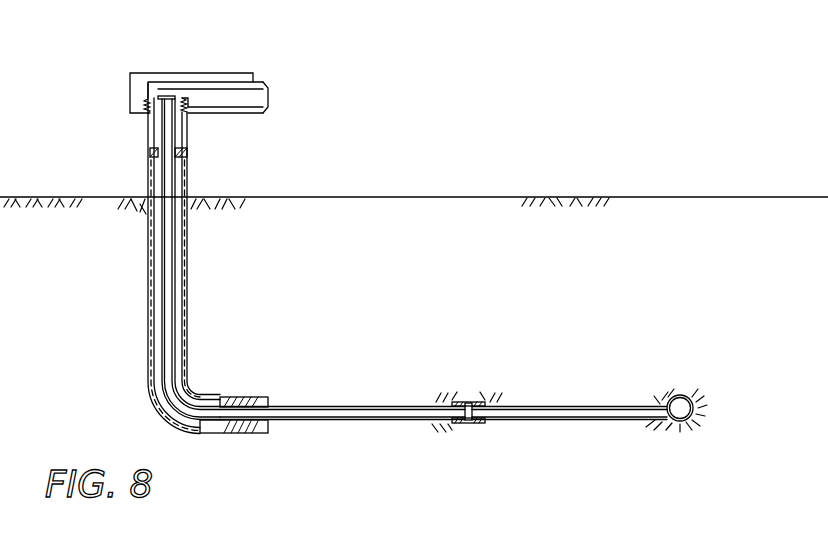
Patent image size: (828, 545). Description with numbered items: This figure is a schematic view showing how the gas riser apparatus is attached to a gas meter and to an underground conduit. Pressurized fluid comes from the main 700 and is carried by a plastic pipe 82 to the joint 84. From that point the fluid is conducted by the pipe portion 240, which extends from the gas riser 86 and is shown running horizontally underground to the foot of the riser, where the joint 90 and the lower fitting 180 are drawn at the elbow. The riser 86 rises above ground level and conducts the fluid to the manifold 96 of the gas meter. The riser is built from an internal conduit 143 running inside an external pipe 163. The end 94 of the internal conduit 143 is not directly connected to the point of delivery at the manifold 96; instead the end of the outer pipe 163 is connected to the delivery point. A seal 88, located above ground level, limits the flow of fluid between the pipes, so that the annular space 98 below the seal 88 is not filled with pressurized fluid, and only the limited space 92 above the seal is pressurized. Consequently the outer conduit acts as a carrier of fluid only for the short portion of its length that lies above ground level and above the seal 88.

The plastic pipe 82 is at (587, 420).
The joint 84 is at (480, 424).
The gas riser 86 is at (146, 335).
The seal 88 is at (189, 155).
The joint 90 is at (245, 399).
The limited space 92 is at (152, 122).
The end of conduit 94 is at (162, 97).
The manifold 96 is at (232, 73).
The annular space 98 is at (157, 243).
The internal conduit 143 is at (173, 323).
The external pipe 163 is at (188, 127).
The lower clamp 180 is at (227, 434).
The pipe portion 240 is at (305, 422).
The main 700 is at (681, 421).